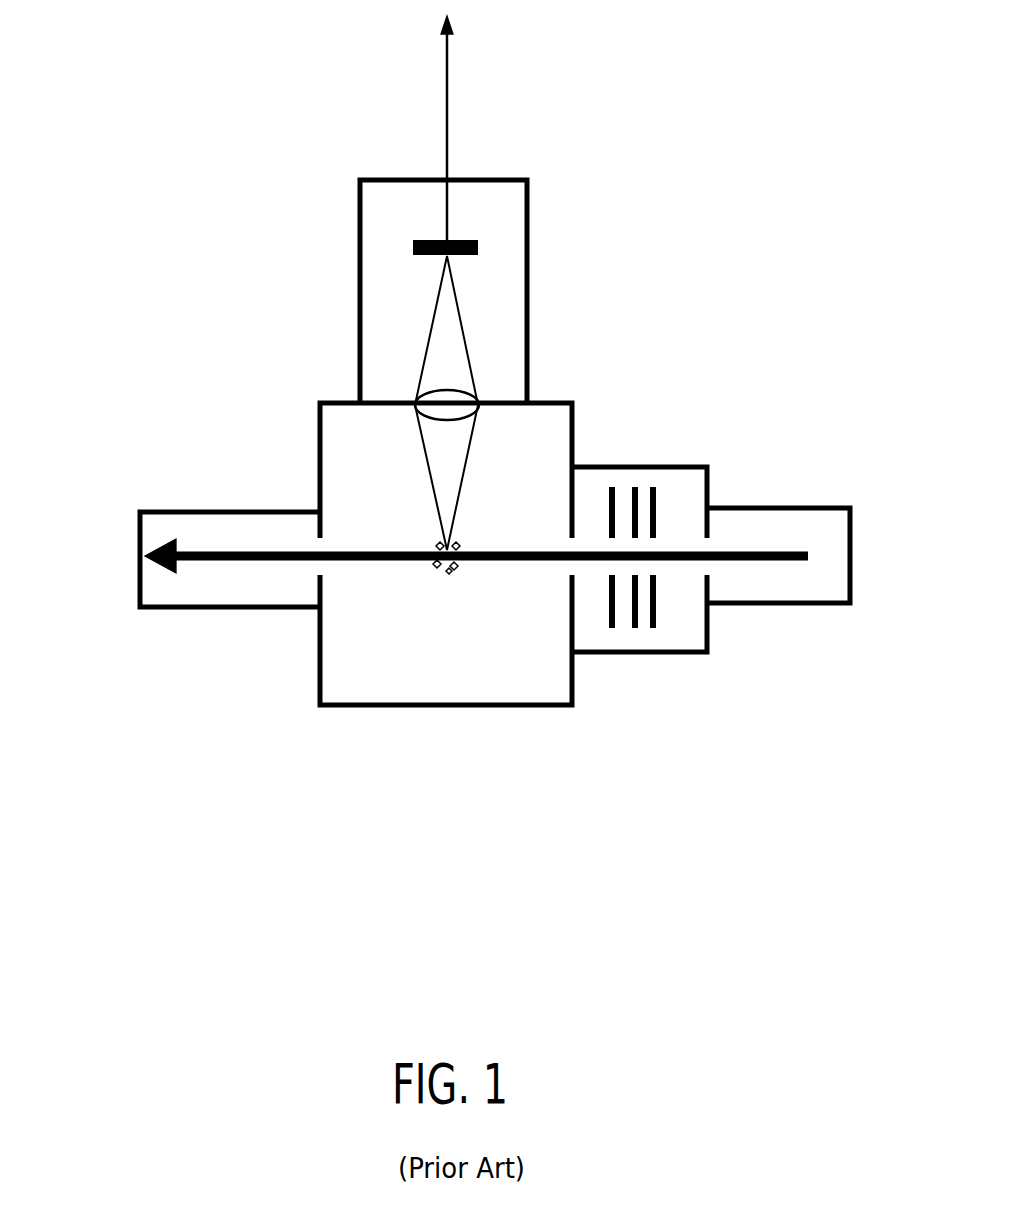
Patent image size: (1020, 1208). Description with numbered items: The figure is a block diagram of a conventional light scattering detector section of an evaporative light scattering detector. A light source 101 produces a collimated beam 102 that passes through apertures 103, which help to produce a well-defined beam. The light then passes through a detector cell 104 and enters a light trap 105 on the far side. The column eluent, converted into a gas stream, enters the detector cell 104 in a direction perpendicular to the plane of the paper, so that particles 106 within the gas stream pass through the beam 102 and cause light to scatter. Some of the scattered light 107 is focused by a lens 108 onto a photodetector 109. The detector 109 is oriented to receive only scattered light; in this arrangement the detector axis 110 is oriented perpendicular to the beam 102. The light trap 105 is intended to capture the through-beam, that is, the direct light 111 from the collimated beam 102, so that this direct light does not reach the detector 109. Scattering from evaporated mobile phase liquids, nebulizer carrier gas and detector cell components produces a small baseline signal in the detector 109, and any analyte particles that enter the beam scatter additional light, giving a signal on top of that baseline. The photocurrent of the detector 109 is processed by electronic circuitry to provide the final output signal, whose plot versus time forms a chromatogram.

The light source 101 is at (845, 605).
The collimated beam 102 is at (782, 547).
The apertures 103 is at (640, 490).
The detector cell 104 is at (548, 708).
The light trap 105 is at (150, 610).
The particles 106 is at (432, 570).
The scattered light 107 is at (460, 482).
The lens 108 is at (425, 402).
The photodetector 109 is at (435, 241).
The detector axis 110 is at (447, 98).
The direct light 111 is at (330, 562).